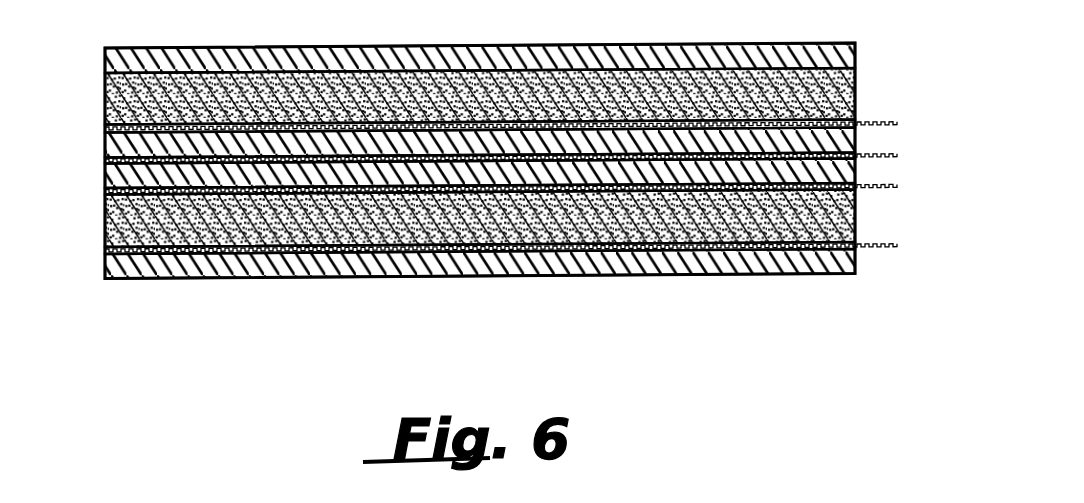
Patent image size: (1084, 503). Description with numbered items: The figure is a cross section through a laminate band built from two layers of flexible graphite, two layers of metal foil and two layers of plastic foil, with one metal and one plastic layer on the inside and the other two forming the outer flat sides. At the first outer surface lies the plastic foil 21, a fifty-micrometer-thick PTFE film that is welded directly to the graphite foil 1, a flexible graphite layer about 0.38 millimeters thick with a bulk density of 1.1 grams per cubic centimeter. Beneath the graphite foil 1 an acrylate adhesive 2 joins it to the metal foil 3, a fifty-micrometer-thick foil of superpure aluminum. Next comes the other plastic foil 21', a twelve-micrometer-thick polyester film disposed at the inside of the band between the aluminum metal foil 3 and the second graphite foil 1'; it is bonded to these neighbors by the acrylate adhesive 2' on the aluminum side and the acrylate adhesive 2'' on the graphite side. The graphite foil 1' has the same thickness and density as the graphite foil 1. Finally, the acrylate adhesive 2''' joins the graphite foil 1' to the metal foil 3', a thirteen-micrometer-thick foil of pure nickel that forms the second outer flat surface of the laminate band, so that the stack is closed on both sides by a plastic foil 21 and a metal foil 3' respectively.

The plastic foil 21 is at (519, 42).
The graphite foil 1 is at (511, 83).
The acrylate adhesive 2 is at (511, 106).
The metal foil 3 is at (511, 137).
The acrylate adhesive 2' is at (513, 170).
The plastic foil 21' is at (521, 192).
The acrylate adhesive 2'' is at (516, 220).
The graphite foil 1' is at (511, 241).
The acrylate adhesive 2''' is at (519, 285).
The metal foil 3' is at (480, 294).